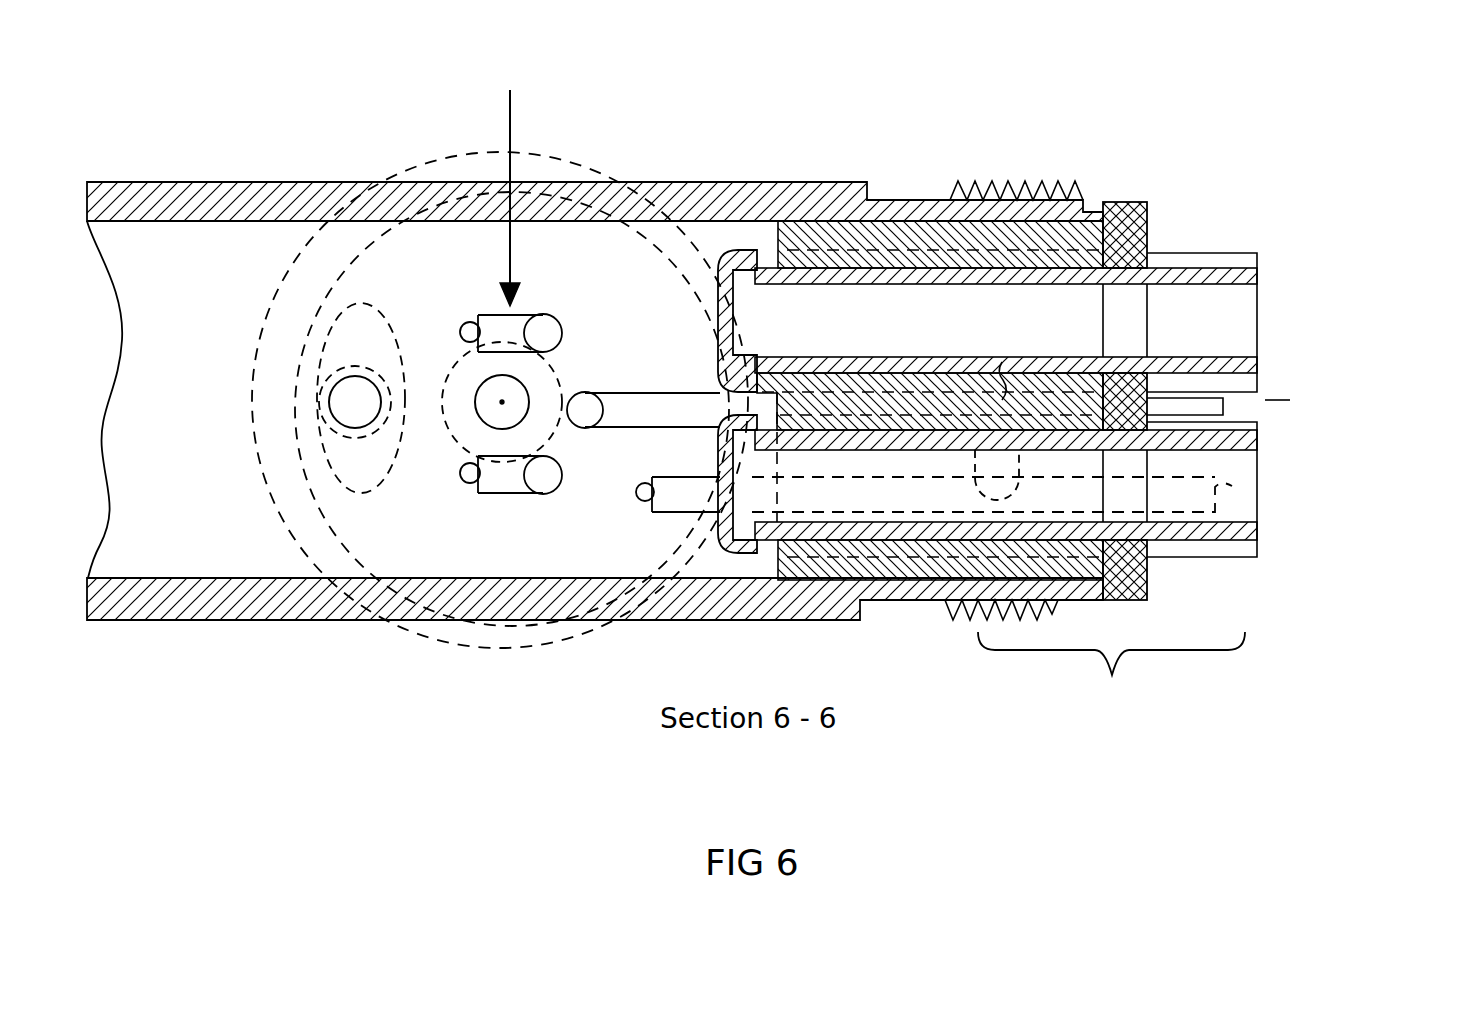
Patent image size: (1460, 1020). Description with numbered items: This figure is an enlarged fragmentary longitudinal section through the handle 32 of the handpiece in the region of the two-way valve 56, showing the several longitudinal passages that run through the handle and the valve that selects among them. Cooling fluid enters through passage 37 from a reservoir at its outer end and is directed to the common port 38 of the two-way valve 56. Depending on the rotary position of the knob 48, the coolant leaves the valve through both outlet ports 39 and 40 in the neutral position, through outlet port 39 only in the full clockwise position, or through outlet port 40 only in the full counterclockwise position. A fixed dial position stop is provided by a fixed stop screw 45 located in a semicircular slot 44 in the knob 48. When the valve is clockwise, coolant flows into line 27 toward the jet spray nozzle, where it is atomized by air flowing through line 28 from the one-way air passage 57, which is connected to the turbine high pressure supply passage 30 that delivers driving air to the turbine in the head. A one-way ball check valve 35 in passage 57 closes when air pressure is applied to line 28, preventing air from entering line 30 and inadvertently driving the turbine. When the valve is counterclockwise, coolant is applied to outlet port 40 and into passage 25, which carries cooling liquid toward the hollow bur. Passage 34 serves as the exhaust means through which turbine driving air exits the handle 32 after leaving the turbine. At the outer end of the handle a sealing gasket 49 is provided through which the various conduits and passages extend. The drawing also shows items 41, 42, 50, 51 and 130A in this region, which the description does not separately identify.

The passage 25 is at (478, 353).
The line 27 is at (478, 493).
The line 28 is at (648, 505).
The passage 30 is at (716, 322).
The handle 32 is at (803, 178).
The passage 34 is at (736, 546).
The 1-way ball check valve 35 is at (1020, 440).
The passage 37 is at (641, 431).
The common port 38 is at (605, 407).
The outlet port 39 is at (547, 496).
The outlet port 40 is at (560, 332).
The roller circle 41 is at (604, 384).
The central shaft 42 is at (501, 377).
The semicircular slot 44 is at (392, 312).
The fixed stop screw 45 is at (363, 366).
The knob 48 is at (602, 170).
The sealing gasket 49 is at (1130, 203).
The threads 50 is at (1011, 183).
The cartridge body 51 is at (1092, 200).
The 2-way valve 56 is at (508, 179).
The one-way air passage 57 is at (1006, 362).
The connector assembly 130A is at (1111, 676).